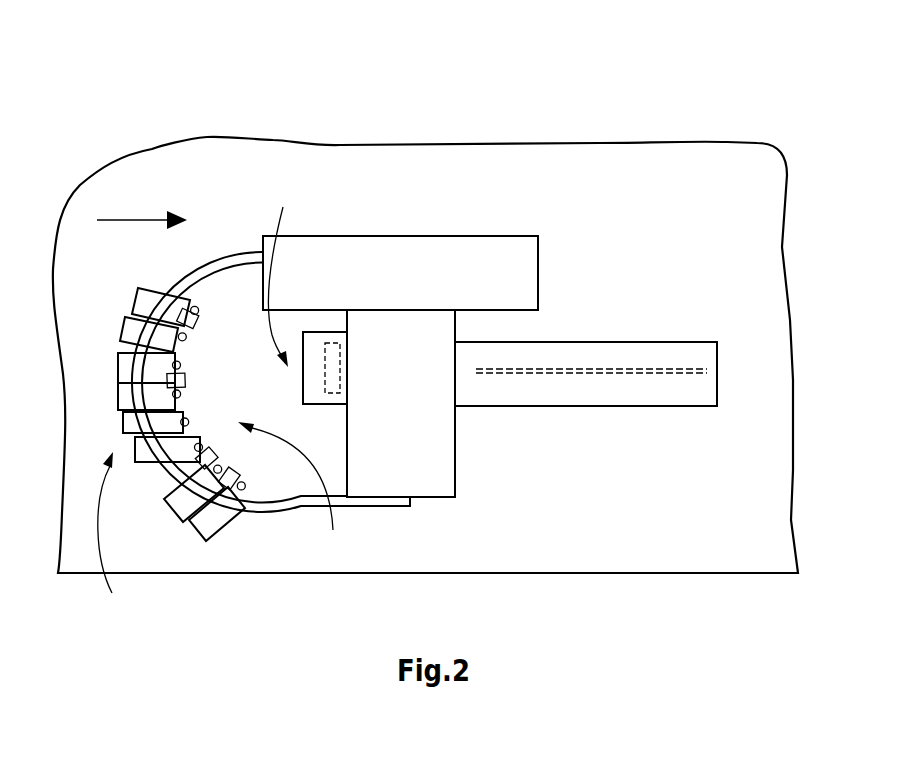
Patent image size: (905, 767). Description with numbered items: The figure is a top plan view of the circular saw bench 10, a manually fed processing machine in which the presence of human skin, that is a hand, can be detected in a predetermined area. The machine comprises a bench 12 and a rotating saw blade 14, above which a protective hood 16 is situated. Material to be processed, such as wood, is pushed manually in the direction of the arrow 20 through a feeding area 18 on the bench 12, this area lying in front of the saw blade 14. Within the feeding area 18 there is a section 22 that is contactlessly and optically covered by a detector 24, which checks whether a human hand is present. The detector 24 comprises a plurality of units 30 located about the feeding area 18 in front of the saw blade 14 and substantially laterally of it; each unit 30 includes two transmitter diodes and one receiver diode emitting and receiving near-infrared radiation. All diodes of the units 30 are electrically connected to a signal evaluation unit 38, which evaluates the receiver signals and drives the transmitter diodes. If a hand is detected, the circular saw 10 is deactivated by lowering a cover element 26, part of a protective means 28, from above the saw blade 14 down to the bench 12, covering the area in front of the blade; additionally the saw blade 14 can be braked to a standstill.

The circular saw bench 10 is at (627, 80).
The bench 12 is at (708, 210).
The saw blade 14 is at (587, 372).
The protective hood 16 is at (629, 353).
The feeding area 18 is at (183, 285).
The arrow 20 is at (125, 220).
The section 22 is at (295, 490).
The detector 24 is at (116, 535).
The cover element 26 is at (328, 353).
The protective means 28 is at (291, 272).
The units 30 is at (155, 302).
The signal evaluation unit 38 is at (436, 267).